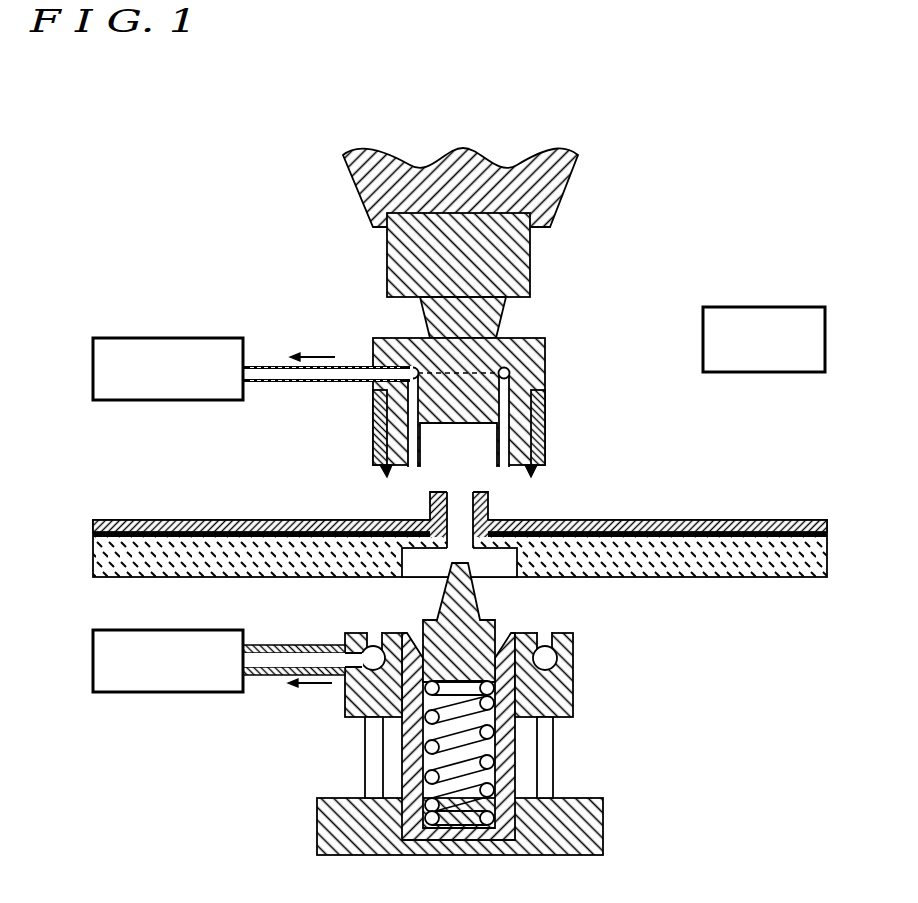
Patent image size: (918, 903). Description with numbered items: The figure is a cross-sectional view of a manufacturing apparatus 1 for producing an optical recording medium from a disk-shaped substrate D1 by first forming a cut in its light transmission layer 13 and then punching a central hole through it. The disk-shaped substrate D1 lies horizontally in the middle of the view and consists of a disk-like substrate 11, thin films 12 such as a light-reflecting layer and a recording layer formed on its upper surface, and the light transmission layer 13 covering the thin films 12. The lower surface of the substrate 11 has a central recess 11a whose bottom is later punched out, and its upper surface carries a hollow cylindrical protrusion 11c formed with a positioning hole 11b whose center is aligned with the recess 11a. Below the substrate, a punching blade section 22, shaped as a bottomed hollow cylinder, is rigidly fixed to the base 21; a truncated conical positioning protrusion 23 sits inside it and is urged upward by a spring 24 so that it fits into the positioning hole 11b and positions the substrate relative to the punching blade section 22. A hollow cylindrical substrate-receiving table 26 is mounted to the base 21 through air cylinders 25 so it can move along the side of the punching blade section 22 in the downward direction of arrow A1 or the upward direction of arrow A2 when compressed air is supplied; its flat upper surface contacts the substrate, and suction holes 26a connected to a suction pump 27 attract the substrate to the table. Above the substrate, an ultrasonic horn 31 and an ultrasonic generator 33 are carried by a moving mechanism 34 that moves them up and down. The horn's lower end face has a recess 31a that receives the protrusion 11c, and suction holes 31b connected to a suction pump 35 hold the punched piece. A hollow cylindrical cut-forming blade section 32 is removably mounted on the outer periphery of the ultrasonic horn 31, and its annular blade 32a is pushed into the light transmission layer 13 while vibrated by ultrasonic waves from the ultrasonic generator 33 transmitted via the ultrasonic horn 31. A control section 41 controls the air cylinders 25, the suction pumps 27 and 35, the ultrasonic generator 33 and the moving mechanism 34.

The manufacturing apparatus 1 is at (290, 113).
The substrate 11 is at (815, 555).
The recess 11a is at (485, 564).
The positioning hole 11b is at (458, 538).
The hollow cylindrical protrusion 11c is at (428, 505).
The thin films 12 is at (822, 531).
The light transmission layer 13 is at (815, 522).
The base 21 is at (582, 827).
The punching blade section 22 is at (510, 770).
The positioning protrusion 23 is at (467, 603).
The spring 24 is at (420, 770).
The air cylinders 25 is at (372, 735).
The substrate-receiving table 26 is at (558, 697).
The suction holes 26a is at (373, 629).
The suction pump 27 is at (207, 630).
The ultrasonic horn 31 is at (545, 370).
The recess 31a is at (433, 459).
The suction holes 31b is at (412, 468).
The cut-forming blade section 32 is at (545, 412).
The blade 32a is at (533, 476).
The ultrasonic generator 33 is at (520, 265).
The moving mechanism 34 is at (548, 189).
The suction pump 35 is at (210, 338).
The control section 41 is at (703, 322).
The disk-shaped substrate D1 is at (170, 505).
The arrow A1 is at (212, 718).
The arrow A2 is at (182, 803).